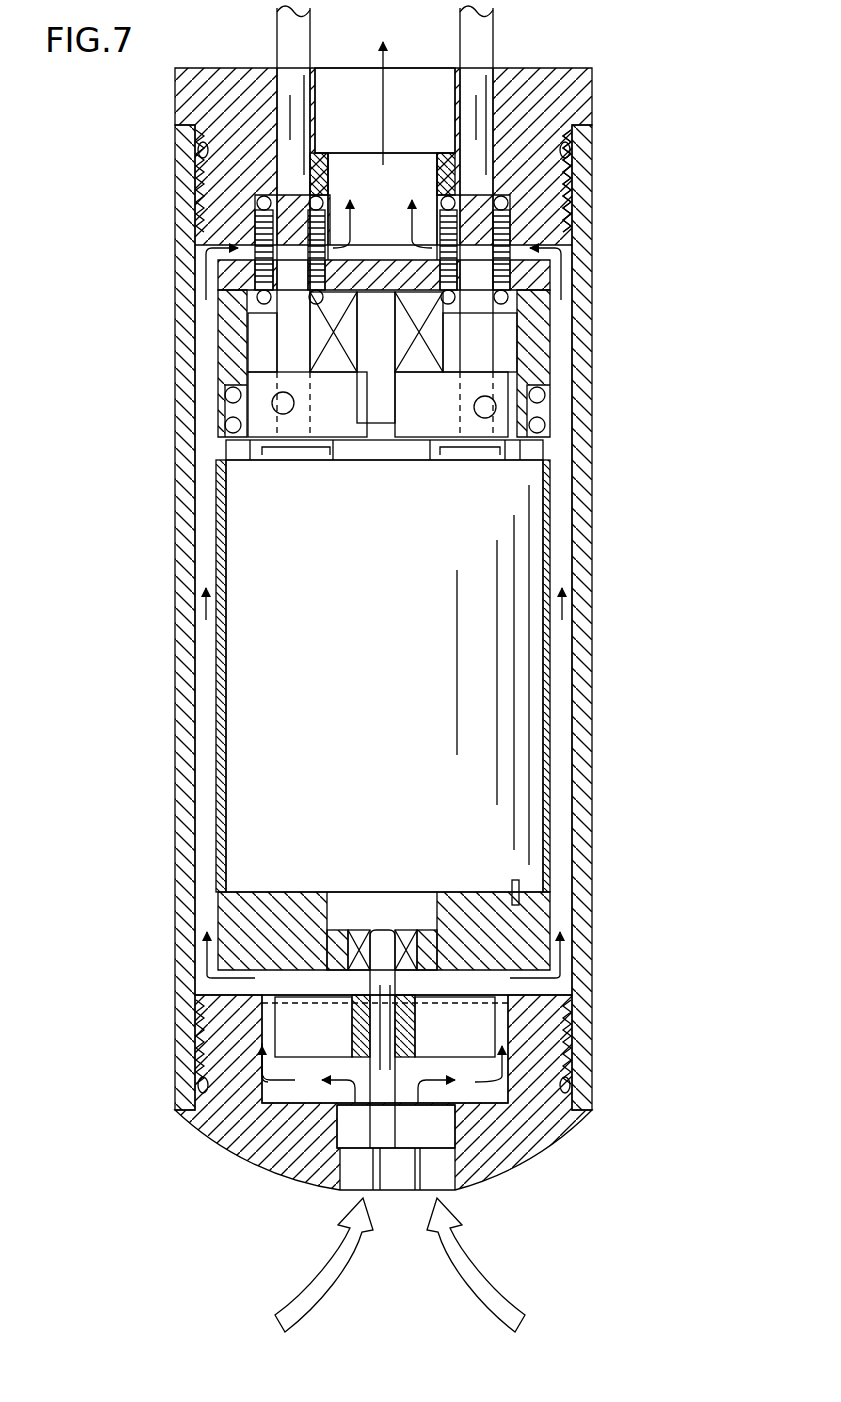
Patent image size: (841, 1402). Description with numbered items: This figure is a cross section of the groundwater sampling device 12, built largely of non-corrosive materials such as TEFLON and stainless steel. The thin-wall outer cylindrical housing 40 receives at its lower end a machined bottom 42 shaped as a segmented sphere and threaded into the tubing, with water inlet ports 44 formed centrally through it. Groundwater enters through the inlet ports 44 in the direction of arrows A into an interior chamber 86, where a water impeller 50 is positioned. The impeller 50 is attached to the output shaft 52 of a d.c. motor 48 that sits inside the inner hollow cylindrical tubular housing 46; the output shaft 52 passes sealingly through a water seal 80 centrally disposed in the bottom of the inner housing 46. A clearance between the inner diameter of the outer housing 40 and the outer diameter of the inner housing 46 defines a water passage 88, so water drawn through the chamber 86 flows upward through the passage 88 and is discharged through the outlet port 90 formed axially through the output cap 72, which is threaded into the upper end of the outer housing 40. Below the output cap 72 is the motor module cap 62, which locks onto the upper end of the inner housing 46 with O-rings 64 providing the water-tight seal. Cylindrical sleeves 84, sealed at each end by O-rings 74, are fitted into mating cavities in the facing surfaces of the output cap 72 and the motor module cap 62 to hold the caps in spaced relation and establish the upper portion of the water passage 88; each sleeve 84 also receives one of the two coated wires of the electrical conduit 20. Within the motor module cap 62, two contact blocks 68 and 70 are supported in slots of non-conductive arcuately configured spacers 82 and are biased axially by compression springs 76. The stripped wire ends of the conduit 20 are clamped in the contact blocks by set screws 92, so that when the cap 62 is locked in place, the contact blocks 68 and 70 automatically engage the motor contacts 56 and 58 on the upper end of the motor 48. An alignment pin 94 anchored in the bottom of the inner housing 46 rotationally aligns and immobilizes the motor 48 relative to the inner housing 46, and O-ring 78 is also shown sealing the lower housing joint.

The groundwater sampling device 12 is at (415, 679).
The electrical conduit 20 is at (290, 48).
The outer cylindrical housing 40 is at (414, 674).
The machined bottom 42 is at (545, 1160).
The water inlet ports 44 is at (440, 1175).
The inner hollow cylindrical tubular housing 46 is at (225, 918).
The d.c. motor 48 is at (360, 645).
The water impeller 50 is at (275, 1030).
The output shaft 52 is at (395, 1022).
The electrical contact 56 is at (520, 455).
The electrical contact 58 is at (262, 457).
The motor module cap 62 is at (216, 300).
The O-rings 64 is at (560, 468).
The contact block 68 is at (537, 398).
The contact block 70 is at (233, 395).
The output cap 72 is at (592, 92).
The O-rings 74 is at (572, 215).
The compression springs 76 is at (433, 330).
The O-ring seal 78 is at (583, 1080).
The water seal 80 is at (425, 928).
The non-conductive arcuately configured spacers 82 is at (222, 350).
The cylindrical sleeves 84 is at (262, 210).
The interior chamber 86 is at (377, 1140).
The water passage 88 is at (205, 748).
The outlet port 90 is at (399, 120).
The set screws 92 is at (475, 412).
The alignment pin 94 is at (512, 885).